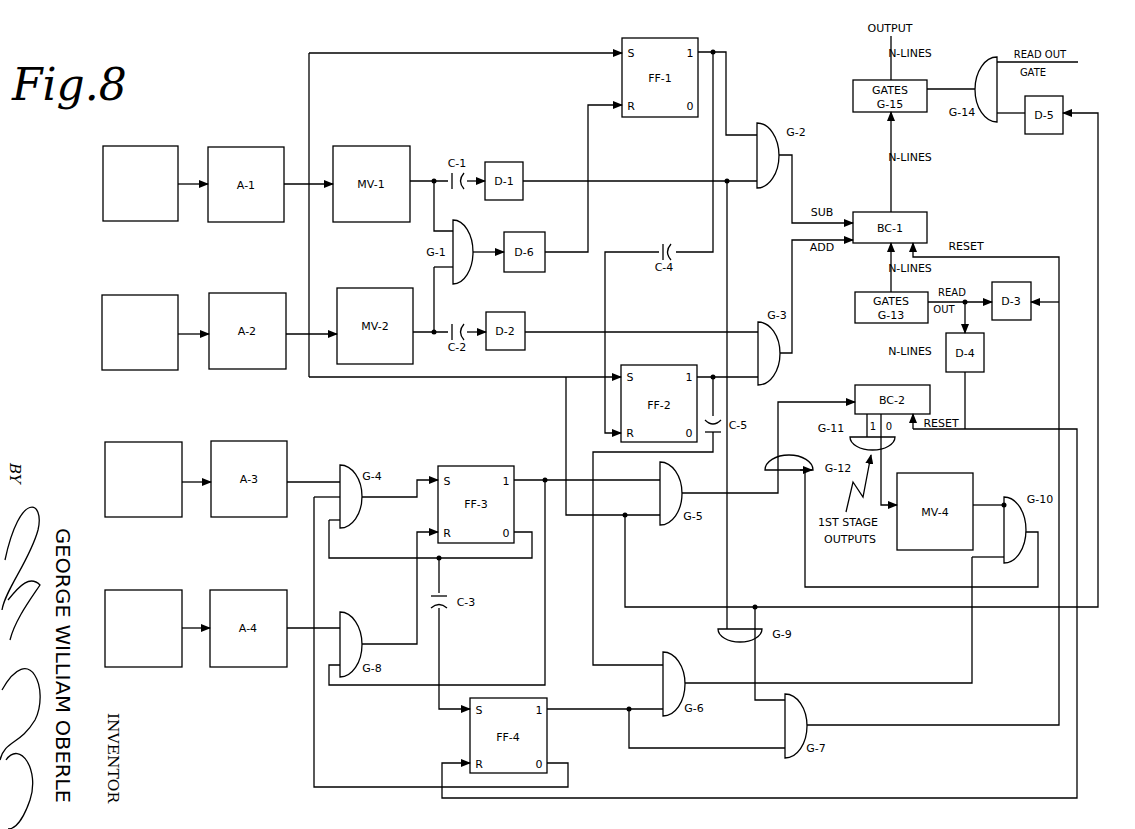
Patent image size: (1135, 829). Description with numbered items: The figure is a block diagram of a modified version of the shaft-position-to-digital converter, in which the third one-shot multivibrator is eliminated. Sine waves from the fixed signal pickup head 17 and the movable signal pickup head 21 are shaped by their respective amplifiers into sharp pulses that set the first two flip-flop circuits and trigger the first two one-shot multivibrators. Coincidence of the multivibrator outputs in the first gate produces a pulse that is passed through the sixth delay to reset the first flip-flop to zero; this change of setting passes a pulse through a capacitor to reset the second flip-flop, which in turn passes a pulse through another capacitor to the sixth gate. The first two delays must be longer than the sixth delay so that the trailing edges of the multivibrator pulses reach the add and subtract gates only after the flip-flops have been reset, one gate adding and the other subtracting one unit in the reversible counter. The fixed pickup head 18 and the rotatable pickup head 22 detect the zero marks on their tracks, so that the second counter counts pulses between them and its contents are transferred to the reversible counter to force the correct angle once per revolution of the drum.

The movable signal pickup head 21 is at (140, 183).
The fixed signal pickup head 17 is at (140, 332).
The fixed pickup head 18 is at (143, 479).
The rotatable pickup head 22 is at (143, 628).